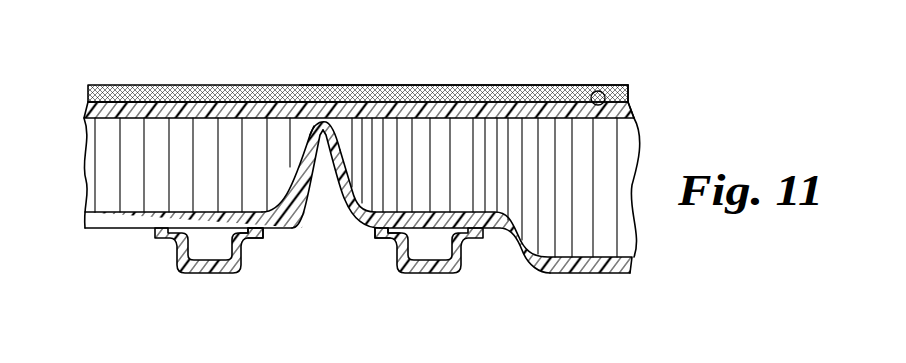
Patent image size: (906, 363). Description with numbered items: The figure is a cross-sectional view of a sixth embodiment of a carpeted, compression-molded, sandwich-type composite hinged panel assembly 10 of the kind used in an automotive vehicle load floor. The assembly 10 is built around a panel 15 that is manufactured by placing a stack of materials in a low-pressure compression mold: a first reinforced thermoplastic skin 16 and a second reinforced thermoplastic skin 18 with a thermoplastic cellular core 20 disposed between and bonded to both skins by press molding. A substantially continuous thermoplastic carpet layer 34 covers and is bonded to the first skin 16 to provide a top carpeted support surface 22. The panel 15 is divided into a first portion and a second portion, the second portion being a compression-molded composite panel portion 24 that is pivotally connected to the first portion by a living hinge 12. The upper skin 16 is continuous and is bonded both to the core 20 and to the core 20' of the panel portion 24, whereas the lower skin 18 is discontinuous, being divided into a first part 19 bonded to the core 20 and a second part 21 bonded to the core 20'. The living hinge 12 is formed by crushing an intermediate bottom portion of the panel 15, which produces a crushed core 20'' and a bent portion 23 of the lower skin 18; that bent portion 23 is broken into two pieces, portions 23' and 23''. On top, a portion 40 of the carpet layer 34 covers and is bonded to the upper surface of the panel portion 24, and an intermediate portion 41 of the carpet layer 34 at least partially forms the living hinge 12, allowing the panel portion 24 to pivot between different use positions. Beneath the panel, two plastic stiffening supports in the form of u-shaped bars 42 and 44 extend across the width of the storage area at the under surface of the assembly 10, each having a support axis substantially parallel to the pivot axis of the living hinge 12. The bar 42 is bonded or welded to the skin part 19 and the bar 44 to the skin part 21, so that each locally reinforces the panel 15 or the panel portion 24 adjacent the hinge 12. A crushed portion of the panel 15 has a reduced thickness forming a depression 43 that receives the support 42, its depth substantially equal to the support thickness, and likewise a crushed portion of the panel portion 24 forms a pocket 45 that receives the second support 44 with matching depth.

The panel assembly 10 is at (528, 35).
The living hinge 12 is at (322, 86).
The panel 15 is at (560, 84).
The first reinforced thermoplastic skin 16 is at (635, 109).
The second reinforced thermoplastic skin 18 is at (634, 266).
The first part of outer skin 19 is at (570, 276).
The thermoplastic cellular core 20 is at (609, 185).
The core of panel portion 20' is at (166, 160).
The crushed core 20'' is at (410, 135).
The second part of outer skin 21 is at (127, 228).
The top carpeted support surface 22 is at (600, 106).
The bent portion of lower skin 23 is at (292, 191).
The portion of bent portion 23' is at (342, 206).
The portion of bent portion 23'' is at (284, 115).
The composite panel portion 24 is at (183, 102).
The carpet layer 34 is at (634, 92).
The portion of carpet layer 40 is at (141, 85).
The intermediate portion of carpet layer 41 is at (322, 89).
The stiffening support 42 is at (430, 275).
The depression 43 is at (434, 231).
The second stiffening support 44 is at (210, 274).
The pocket 45 is at (210, 228).